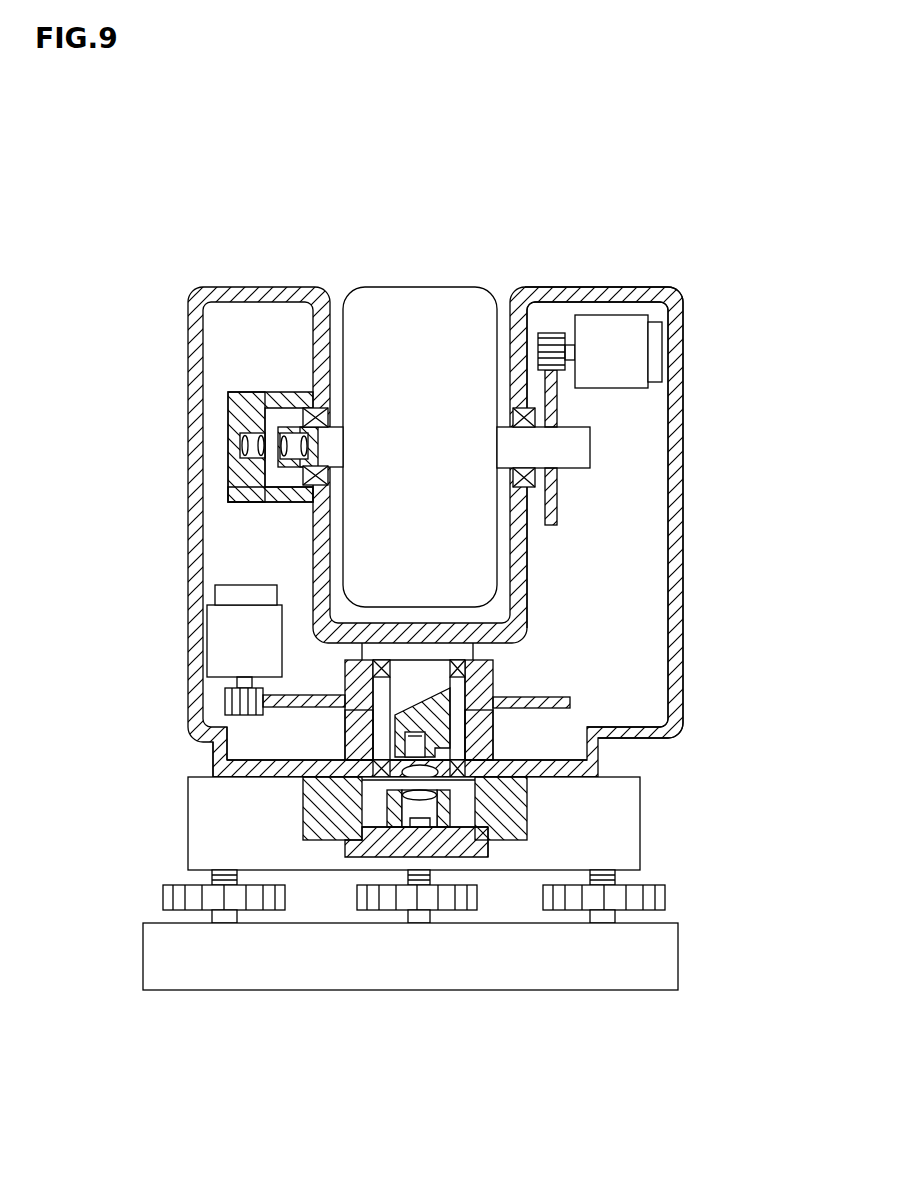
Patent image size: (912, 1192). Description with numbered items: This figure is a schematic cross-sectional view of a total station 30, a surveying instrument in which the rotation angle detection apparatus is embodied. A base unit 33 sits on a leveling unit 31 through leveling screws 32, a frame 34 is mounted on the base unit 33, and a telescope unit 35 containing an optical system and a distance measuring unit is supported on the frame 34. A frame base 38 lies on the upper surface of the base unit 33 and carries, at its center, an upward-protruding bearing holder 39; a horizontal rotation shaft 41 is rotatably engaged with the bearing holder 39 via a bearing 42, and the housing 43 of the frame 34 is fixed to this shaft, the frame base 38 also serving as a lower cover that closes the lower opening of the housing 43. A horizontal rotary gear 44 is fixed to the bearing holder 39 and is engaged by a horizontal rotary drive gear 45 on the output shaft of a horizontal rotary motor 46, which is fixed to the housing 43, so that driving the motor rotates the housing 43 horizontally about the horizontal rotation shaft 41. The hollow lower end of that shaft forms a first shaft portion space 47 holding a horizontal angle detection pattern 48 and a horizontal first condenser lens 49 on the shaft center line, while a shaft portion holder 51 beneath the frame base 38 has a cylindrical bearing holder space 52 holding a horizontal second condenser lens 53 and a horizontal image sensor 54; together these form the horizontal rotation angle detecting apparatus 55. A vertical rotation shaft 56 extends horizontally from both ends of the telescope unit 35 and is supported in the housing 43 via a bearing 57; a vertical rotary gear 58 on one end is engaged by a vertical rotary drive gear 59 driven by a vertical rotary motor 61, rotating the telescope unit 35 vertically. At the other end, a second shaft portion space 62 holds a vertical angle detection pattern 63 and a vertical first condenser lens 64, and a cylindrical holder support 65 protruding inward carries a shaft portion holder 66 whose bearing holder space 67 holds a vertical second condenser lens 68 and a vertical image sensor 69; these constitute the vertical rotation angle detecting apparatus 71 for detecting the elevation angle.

The total station 30 is at (160, 221).
The leveling unit 31 is at (143, 957).
The leveling screws 32 is at (668, 893).
The base unit 33 is at (640, 812).
The frame 34 is at (186, 478).
The telescope unit 35 is at (458, 287).
The frame base 38 is at (600, 765).
The bearing holder 39 is at (493, 748).
The horizontal rotation shaft 41 is at (492, 683).
The bearing 42 is at (442, 740).
The housing 43 is at (683, 596).
The horizontal rotary gear 44 is at (550, 696).
The horizontal rotary drive gear 45 is at (213, 750).
The horizontal rotary motor 46 is at (237, 633).
The first shaft portion space 47 is at (345, 742).
The horizontal angle detection pattern 48 is at (415, 740).
The horizontal first condenser lens 49 is at (305, 798).
The shaft portion holder 51 is at (478, 858).
The bearing holder space 52 is at (392, 835).
The horizontal second condenser lens 53 is at (527, 793).
The horizontal image sensor 54 is at (447, 843).
The horizontal rotation angle detecting apparatus 55 is at (497, 850).
The vertical rotation shaft 56 is at (577, 473).
The bearing 57 is at (510, 415).
The vertical rotary gear 58 is at (558, 512).
The vertical rotary drive gear 59 is at (548, 333).
The vertical rotary motor 61 is at (613, 390).
The second shaft portion space 62 is at (290, 440).
The vertical angle detection pattern 63 is at (295, 443).
The vertical first condenser lens 64 is at (264, 440).
The holder support 65 is at (262, 497).
The shaft portion holder 66 is at (230, 412).
The bearing holder space 67 is at (230, 437).
The vertical second condenser lens 68 is at (250, 437).
The vertical image sensor 69 is at (246, 490).
The vertical rotation angle detecting apparatus 71 is at (224, 383).